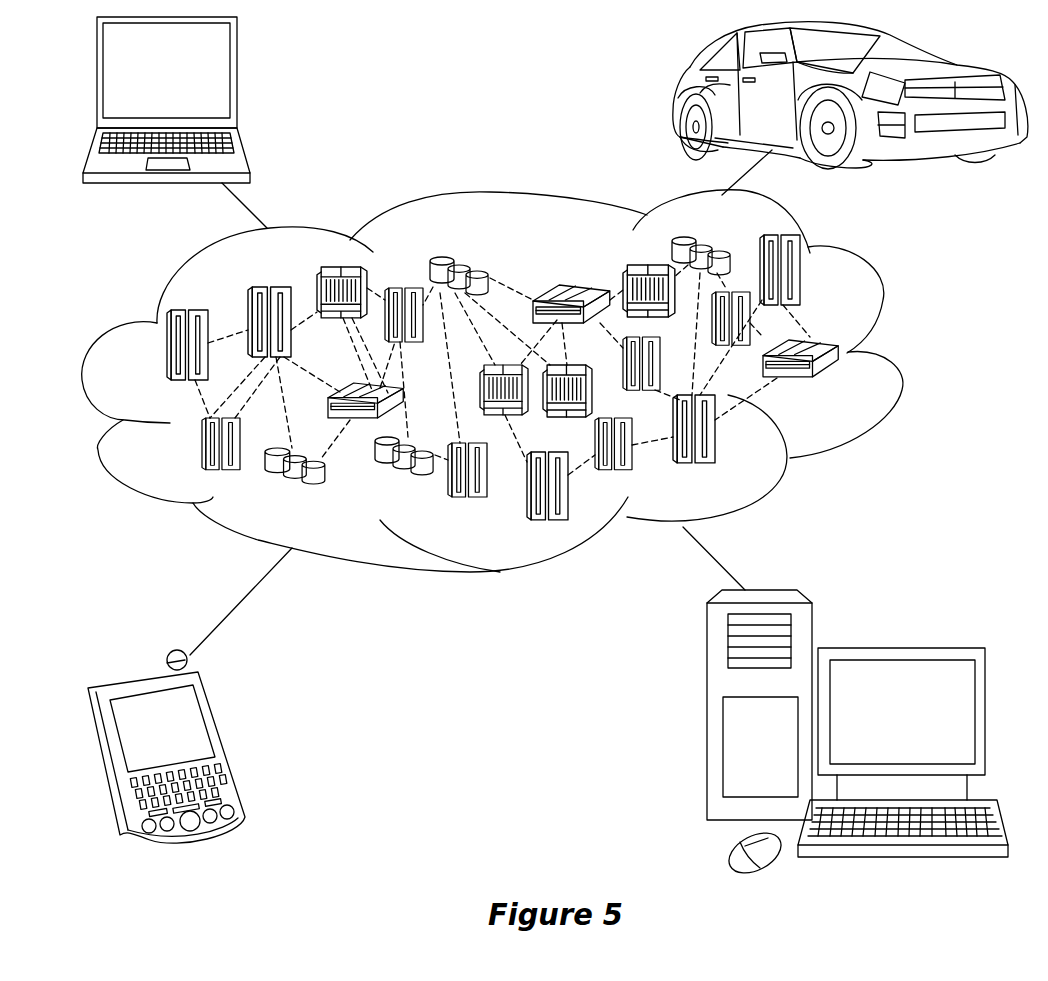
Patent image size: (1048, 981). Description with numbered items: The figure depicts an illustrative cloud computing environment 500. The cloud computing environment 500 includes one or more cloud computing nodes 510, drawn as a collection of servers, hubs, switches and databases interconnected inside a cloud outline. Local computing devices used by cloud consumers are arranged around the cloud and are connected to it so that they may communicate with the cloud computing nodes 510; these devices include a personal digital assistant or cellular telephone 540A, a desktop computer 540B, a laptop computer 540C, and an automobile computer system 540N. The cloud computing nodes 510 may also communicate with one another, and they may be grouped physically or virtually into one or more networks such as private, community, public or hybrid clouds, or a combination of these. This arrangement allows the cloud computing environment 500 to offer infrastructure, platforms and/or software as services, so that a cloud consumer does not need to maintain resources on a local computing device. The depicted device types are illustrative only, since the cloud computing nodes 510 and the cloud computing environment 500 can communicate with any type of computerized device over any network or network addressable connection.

The cloud computing environment 500 is at (900, 355).
The cloud computing nodes 510 is at (845, 388).
The personal digital assistant or cellular telephone 540A is at (226, 740).
The desktop computer 540B is at (898, 648).
The laptop computer 540C is at (237, 80).
The automobile computer system 540N is at (683, 93).